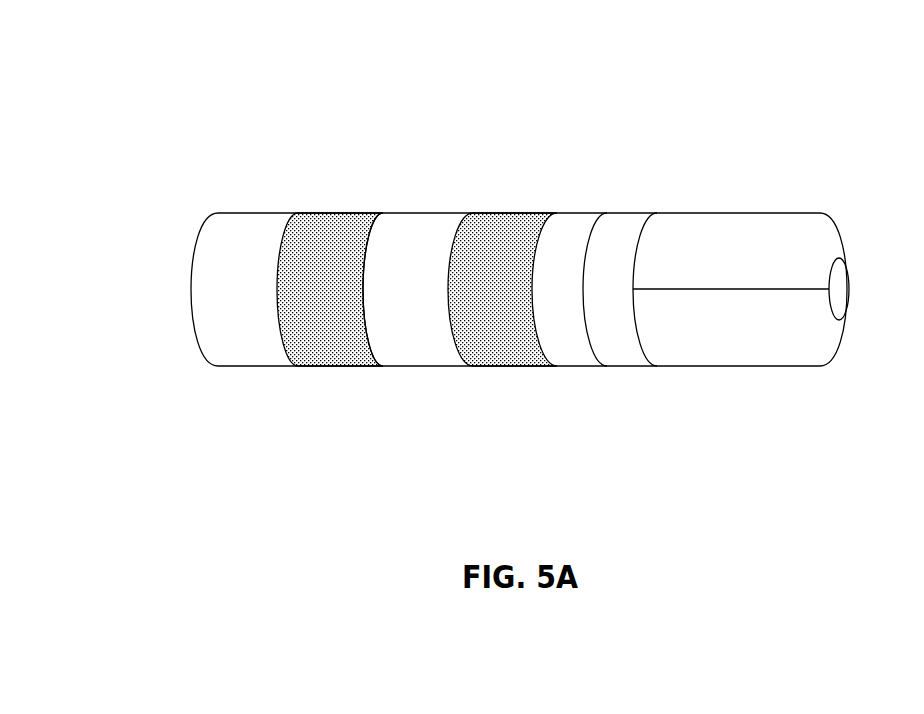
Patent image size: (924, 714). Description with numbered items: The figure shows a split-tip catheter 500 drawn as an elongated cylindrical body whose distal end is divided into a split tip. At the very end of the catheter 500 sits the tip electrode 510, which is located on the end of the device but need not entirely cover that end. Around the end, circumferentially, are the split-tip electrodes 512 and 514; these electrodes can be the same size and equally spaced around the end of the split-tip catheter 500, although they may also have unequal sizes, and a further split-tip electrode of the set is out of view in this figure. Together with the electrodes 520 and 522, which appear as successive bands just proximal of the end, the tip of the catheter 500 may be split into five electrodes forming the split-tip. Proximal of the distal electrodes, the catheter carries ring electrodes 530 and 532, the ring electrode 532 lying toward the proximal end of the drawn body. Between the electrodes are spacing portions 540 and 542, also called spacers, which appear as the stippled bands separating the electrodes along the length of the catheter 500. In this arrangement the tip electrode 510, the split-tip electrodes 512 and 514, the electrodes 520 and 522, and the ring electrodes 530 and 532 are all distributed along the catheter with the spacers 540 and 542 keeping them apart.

The split-tip catheter 500 is at (835, 71).
The tip electrode 510 is at (849, 292).
The split-tip electrode 512 is at (785, 212).
The split-tip electrode 514 is at (784, 367).
The tip electrode 520 is at (642, 367).
The tip electrode 522 is at (582, 212).
The ring electrode 530 is at (427, 367).
The ring electrode 532 is at (190, 308).
The spacing portion 540 is at (515, 367).
The spacing portion 542 is at (328, 212).